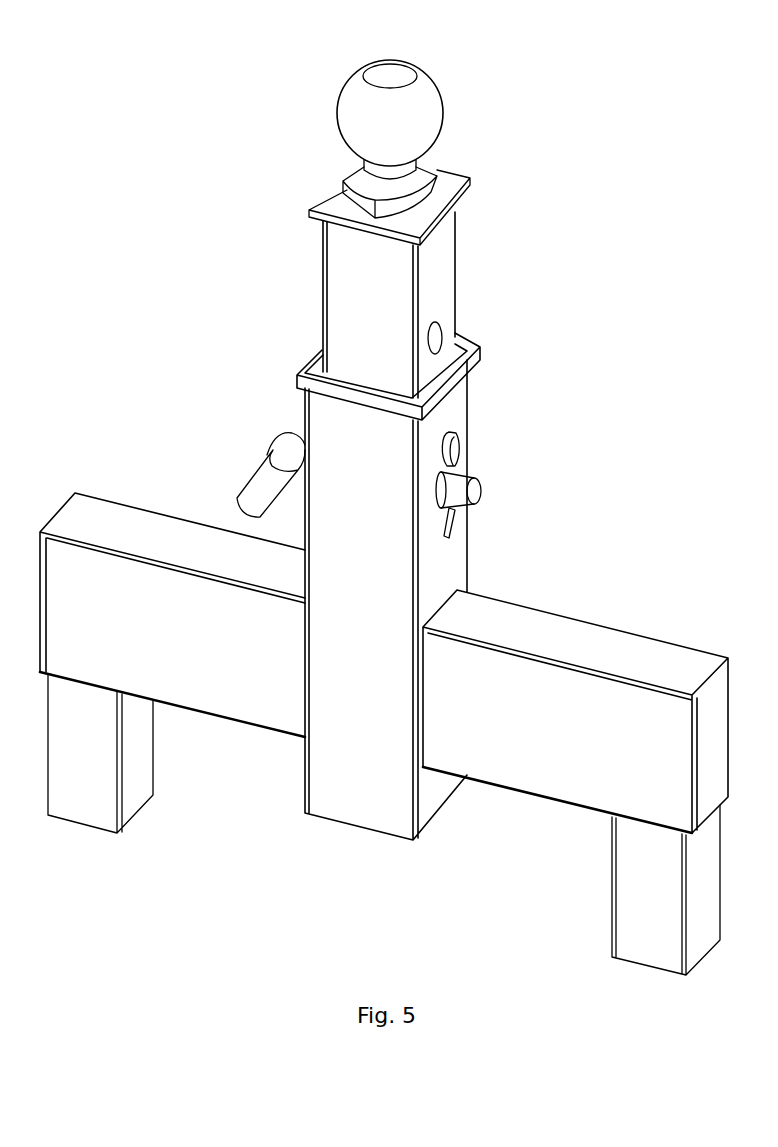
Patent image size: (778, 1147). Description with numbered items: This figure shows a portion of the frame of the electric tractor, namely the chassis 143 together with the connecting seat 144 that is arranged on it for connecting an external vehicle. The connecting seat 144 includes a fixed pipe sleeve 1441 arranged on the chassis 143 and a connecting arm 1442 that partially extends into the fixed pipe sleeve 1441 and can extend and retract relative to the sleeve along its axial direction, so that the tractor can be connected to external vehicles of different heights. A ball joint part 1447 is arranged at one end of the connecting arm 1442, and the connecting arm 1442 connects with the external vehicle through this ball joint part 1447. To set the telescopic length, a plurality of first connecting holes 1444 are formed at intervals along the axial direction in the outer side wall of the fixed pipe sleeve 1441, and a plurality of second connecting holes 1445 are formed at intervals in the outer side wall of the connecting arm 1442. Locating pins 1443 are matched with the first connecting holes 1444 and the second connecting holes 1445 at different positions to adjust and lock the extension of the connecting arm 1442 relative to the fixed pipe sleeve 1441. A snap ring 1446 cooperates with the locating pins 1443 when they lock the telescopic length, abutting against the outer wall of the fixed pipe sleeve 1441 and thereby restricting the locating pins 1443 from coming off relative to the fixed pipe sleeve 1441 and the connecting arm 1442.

The chassis 143 is at (563, 650).
The connecting seat 144 is at (480, 212).
The fixed pipe sleeve 1441 is at (345, 448).
The connecting arm 1442 is at (352, 322).
The locating pin 1443 is at (257, 493).
The first connecting hole 1444 is at (461, 475).
The second connecting hole 1445 is at (442, 338).
The snap ring 1446 is at (455, 440).
The ball joint part 1447 is at (385, 118).